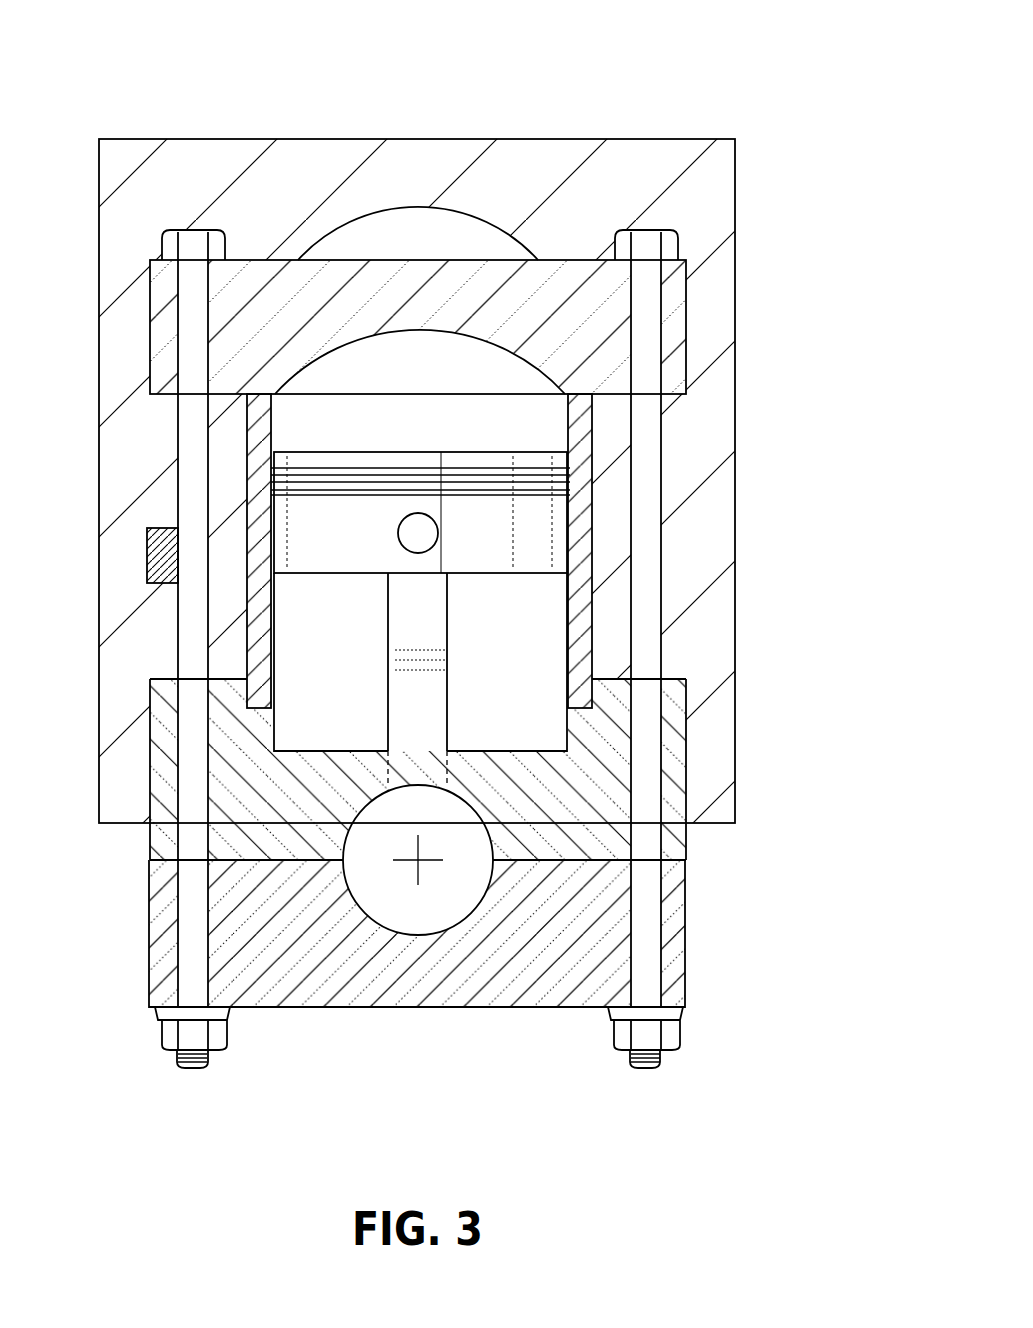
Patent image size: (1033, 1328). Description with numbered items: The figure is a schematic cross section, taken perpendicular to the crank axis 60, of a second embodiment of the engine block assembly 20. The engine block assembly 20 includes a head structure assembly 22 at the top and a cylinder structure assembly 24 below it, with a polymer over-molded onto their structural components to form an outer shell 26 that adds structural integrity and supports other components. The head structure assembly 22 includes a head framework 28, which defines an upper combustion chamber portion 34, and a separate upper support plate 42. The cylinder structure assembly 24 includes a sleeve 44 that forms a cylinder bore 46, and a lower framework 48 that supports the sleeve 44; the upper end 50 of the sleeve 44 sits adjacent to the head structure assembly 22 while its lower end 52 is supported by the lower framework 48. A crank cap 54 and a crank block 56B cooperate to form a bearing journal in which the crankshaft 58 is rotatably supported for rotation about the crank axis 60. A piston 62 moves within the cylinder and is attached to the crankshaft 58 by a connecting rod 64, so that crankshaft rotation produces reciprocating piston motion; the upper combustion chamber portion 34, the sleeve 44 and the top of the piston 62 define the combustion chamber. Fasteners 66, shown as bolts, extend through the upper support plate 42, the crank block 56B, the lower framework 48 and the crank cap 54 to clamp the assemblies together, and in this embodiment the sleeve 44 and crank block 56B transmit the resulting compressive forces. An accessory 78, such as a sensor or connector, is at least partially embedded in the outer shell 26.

The engine block assembly 20 is at (606, 42).
The head structure assembly 22 is at (688, 299).
The cylinder structure assembly 24 is at (689, 934).
The outer shell 26 is at (250, 139).
The head framework 28 is at (418, 206).
The upper combustion chamber portion 34 is at (425, 340).
The upper support plate 42 is at (676, 322).
The sleeve 44 is at (582, 622).
The cylinder bore 46 is at (265, 613).
The lower framework 48 is at (678, 692).
The upper end 50 is at (263, 394).
The lower end 52 is at (262, 729).
The crank cap 54 is at (160, 950).
The crank block 56B is at (672, 795).
The crankshaft 58 is at (433, 872).
The crank axis 60 is at (418, 866).
The piston 62 is at (335, 505).
The connecting rod 64 is at (428, 612).
The fasteners 66 is at (195, 315).
The accessory 78 is at (145, 550).